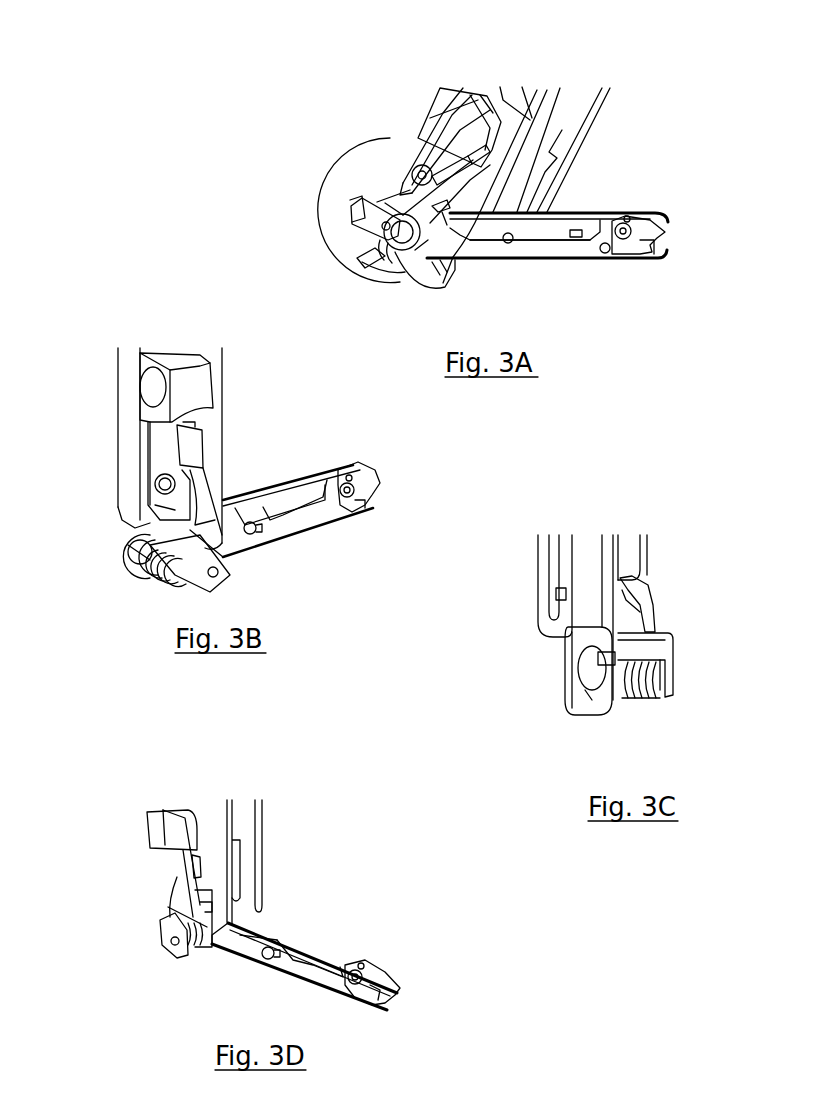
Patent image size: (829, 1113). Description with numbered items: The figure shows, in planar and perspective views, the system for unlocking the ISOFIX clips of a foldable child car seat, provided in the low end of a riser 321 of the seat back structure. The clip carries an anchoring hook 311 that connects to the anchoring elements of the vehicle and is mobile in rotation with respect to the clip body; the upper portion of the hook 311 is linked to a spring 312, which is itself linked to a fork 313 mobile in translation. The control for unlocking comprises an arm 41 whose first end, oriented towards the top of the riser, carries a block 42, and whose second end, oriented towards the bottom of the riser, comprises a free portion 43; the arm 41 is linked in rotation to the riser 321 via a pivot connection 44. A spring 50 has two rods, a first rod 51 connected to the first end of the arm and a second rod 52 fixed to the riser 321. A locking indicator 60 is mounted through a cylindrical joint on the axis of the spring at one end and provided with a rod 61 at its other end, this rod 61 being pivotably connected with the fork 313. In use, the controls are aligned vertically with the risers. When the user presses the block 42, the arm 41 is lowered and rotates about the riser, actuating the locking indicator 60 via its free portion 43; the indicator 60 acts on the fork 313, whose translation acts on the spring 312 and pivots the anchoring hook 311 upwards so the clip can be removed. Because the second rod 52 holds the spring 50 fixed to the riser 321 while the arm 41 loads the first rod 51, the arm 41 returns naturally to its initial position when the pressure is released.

In FIG. 3A, the arm 41 is at (417, 153).
In FIG. 3B, the arm 41 is at (157, 450).
In FIG. 3A, the block 42 is at (436, 104).
In FIG. 3B, the block 42 is at (188, 358).
In FIG. 3D, the block 42 is at (160, 813).
In FIG. 3A, the free portion 43 is at (377, 202).
In FIG. 3B, the free portion 43 is at (120, 570).
In FIG. 3A, the pivot connection 44 is at (403, 177).
In FIG. 3A, the spring 50 is at (390, 252).
In FIG. 3C, the spring 50 is at (643, 702).
In FIG. 3A, the first rod 51 is at (437, 232).
In FIG. 3B, the first rod 51 is at (190, 492).
In FIG. 3C, the first rod 51 is at (643, 592).
In FIG. 3A, the second rod 52 is at (453, 240).
In FIG. 3A, the locking indicator 60 is at (350, 220).
In FIG. 3B, the locking indicator 60 is at (180, 560).
In FIG. 3C, the locking indicator 60 is at (670, 658).
In FIG. 3D, the locking indicator 60 is at (177, 958).
In FIG. 3B, the rod 61 is at (120, 543).
In FIG. 3C, the rod 61 is at (600, 695).
In FIG. 3A, the anchoring hook 311 is at (663, 240).
In FIG. 3B, the anchoring hook 311 is at (353, 513).
In FIG. 3D, the anchoring hook 311 is at (368, 963).
In FIG. 3A, the spring 312 is at (573, 213).
In FIG. 3B, the spring 312 is at (297, 478).
In FIG. 3D, the spring 312 is at (313, 943).
In FIG. 3A, the fork 313 is at (567, 250).
In FIG. 3B, the fork 313 is at (290, 520).
In FIG. 3D, the fork 313 is at (300, 977).
In FIG. 3A, the riser 321 is at (530, 120).
In FIG. 3C, the riser 321 is at (567, 568).
In FIG. 3D, the riser 321 is at (253, 827).